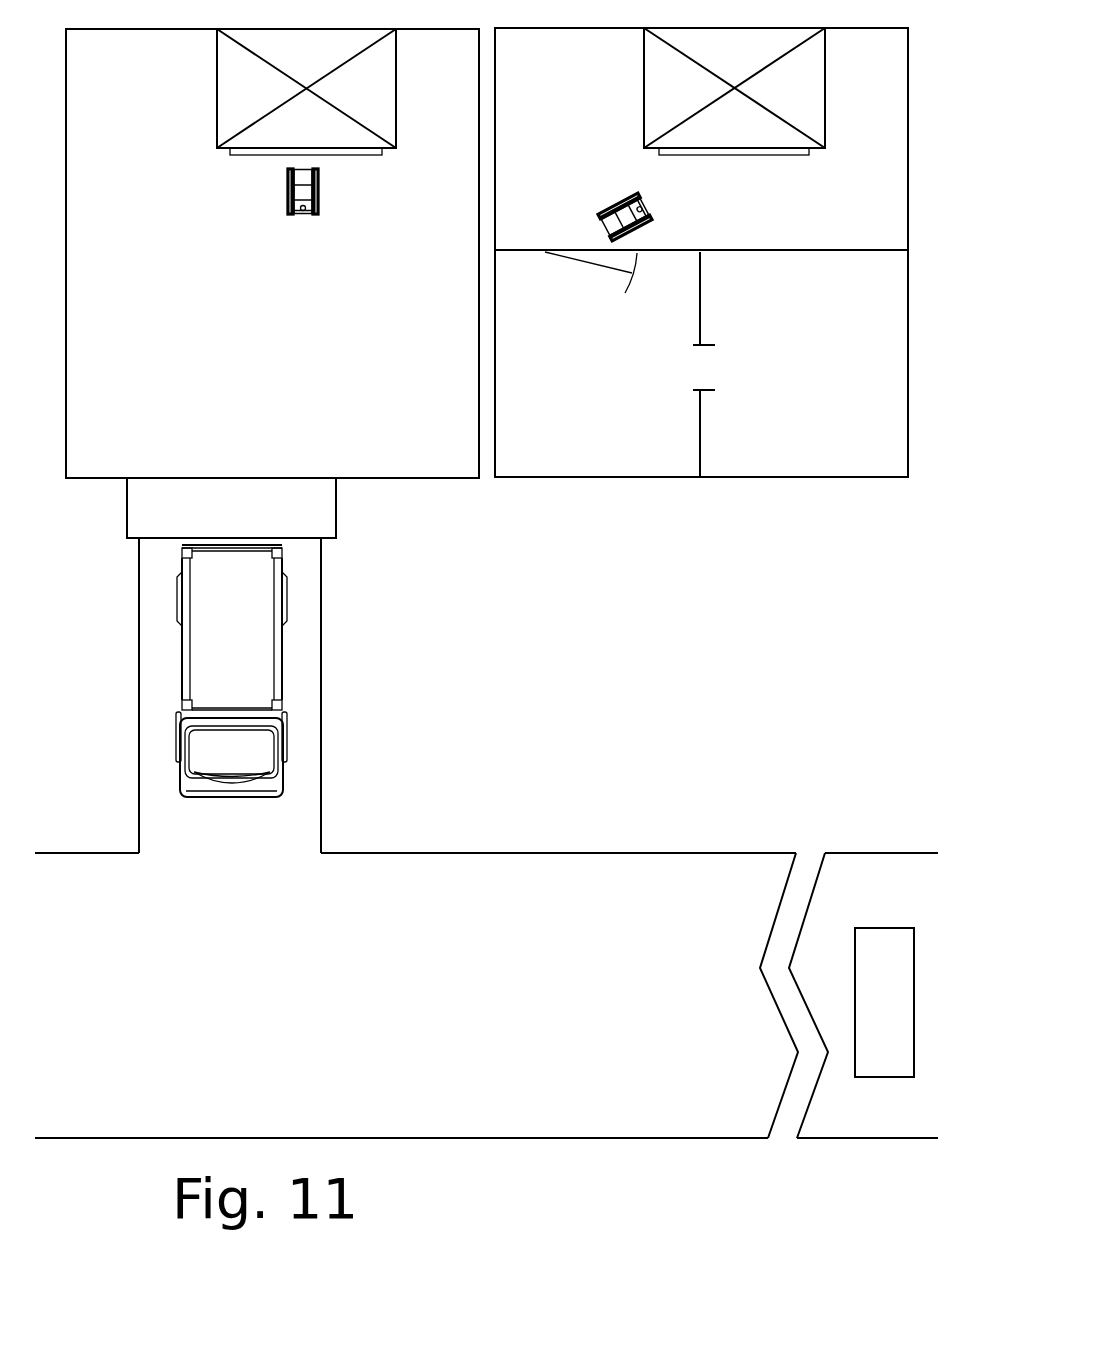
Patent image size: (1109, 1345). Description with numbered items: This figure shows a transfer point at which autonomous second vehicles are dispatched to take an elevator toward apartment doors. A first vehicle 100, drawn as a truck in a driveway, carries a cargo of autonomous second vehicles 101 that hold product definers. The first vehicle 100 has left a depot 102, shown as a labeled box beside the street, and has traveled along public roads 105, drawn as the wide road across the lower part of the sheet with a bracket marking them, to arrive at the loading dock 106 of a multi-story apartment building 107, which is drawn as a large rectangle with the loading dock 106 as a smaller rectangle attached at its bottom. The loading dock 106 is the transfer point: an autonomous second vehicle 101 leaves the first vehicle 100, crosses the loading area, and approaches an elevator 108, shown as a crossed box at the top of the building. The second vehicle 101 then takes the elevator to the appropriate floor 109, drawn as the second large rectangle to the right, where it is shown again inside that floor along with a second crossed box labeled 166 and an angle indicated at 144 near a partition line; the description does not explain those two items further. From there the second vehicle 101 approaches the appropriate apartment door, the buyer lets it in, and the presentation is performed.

The first vehicle 100 is at (282, 688).
The autonomous second vehicle 101 is at (337, 187).
The depot 102 is at (892, 1077).
The public roads 105 is at (486, 995).
The loading dock 106 is at (336, 505).
The multi-story apartment building 107 is at (417, 478).
The elevator 108 is at (396, 117).
The floor 109 is at (558, 477).
The turning angle 144 is at (618, 272).
The charging station 166 is at (825, 123).